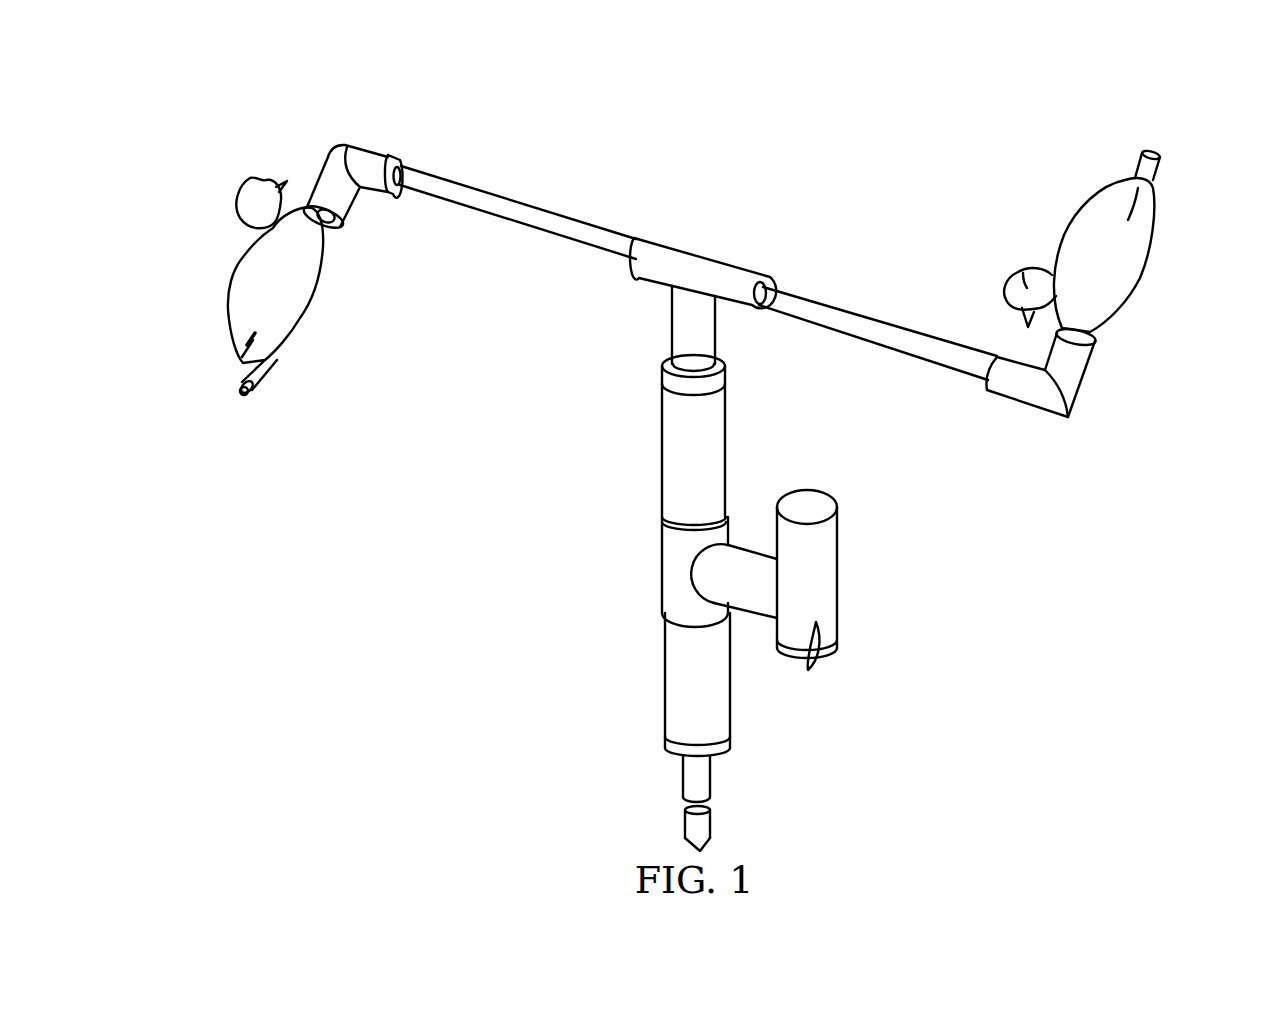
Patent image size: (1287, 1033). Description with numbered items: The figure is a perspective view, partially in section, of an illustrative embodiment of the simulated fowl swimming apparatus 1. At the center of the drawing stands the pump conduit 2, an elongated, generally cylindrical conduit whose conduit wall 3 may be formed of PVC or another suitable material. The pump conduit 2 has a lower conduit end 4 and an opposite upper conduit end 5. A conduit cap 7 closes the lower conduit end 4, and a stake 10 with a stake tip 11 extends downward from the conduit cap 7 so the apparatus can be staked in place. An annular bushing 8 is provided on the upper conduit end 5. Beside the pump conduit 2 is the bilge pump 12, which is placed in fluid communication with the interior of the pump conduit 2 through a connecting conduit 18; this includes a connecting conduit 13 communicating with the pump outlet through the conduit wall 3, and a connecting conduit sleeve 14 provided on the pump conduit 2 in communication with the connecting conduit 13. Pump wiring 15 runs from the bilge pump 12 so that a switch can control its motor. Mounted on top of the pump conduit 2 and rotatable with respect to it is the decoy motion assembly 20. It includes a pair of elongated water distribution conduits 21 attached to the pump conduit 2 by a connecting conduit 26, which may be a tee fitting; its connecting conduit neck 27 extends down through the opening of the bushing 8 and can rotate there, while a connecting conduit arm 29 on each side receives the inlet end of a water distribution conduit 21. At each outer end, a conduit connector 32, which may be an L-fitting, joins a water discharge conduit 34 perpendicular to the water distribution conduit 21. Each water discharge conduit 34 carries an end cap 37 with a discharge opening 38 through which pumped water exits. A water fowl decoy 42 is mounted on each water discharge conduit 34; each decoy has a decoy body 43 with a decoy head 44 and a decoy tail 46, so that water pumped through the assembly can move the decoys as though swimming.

The simulated fowl swimming apparatus 1 is at (565, 80).
The pump conduit 2 is at (722, 604).
The conduit wall 3 is at (710, 447).
The lower conduit end 4 is at (722, 752).
The upper conduit end 5 is at (724, 354).
The conduit cap 7 is at (683, 752).
The annular bushing 8 is at (667, 378).
The stake 10 is at (700, 818).
The stake tip 11 is at (700, 850).
The bilge pump 12 is at (846, 580).
The connecting conduit 13 is at (755, 595).
The connecting conduit sleeve 14 is at (675, 565).
The pump wiring 15 is at (838, 630).
The connecting conduit 18 is at (662, 593).
The decoy motion assembly 20 is at (540, 191).
The water distribution conduit 21 is at (517, 225).
The connecting conduit 26 is at (688, 254).
The connecting conduit neck 27 is at (688, 322).
The connecting conduit arm 29 is at (650, 258).
The conduit connector 32 is at (358, 155).
The water discharge conduit 34 is at (713, 270).
The end cap 37 is at (664, 270).
The discharge opening 38 is at (238, 397).
The water fowl decoy 42 is at (685, 235).
The decoy body 43 is at (293, 282).
The decoy head 44 is at (250, 190).
The decoy tail 46 is at (235, 343).